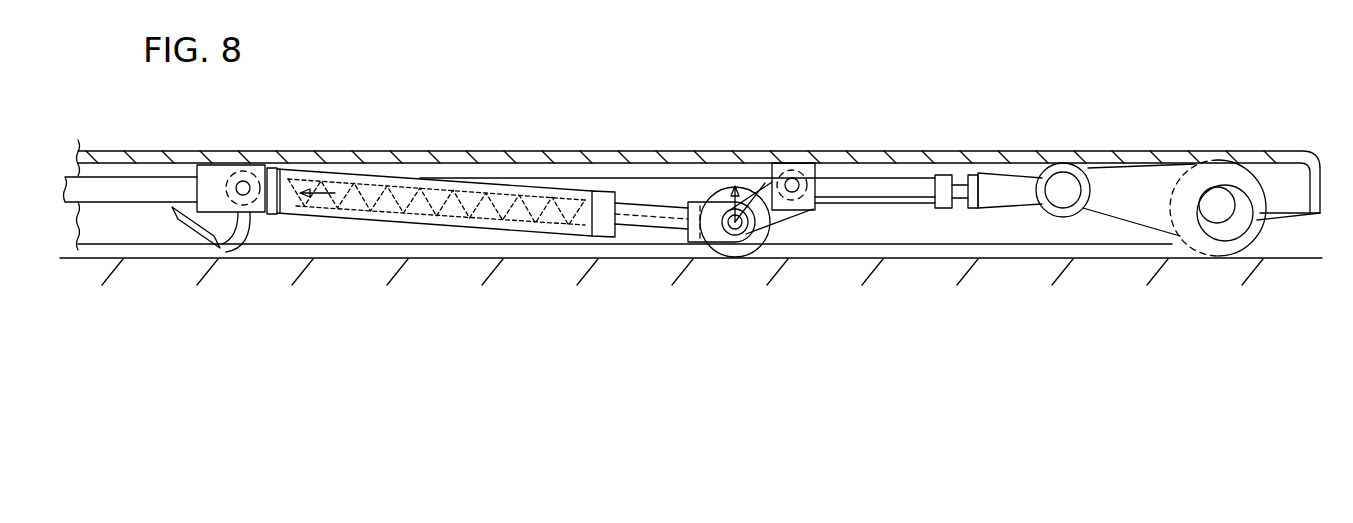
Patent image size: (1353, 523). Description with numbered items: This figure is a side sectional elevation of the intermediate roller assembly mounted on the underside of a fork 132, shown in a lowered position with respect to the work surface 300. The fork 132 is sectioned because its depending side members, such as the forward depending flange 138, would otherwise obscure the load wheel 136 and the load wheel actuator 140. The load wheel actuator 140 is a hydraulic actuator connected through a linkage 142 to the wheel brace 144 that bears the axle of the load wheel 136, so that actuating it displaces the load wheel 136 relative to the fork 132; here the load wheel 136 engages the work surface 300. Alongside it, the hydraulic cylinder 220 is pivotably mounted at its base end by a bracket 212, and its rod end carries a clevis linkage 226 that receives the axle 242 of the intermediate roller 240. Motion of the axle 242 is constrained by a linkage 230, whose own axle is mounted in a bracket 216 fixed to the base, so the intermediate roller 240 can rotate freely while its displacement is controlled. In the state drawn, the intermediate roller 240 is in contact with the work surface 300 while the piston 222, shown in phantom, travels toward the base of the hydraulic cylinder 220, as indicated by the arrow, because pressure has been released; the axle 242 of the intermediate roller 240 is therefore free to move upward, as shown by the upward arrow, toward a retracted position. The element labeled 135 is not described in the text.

The fork 132 is at (600, 151).
The cam 135 is at (1193, 158).
The load wheel 136 is at (1240, 172).
The forward depending flange 138 is at (1318, 175).
The load wheel actuator 140 is at (119, 188).
The linkage 142 is at (1012, 190).
The wheel brace 144 is at (1139, 200).
The bracket 212 is at (203, 166).
The bracket 216 is at (799, 164).
The hydraulic cylinder 220 is at (418, 188).
The piston 222 is at (338, 185).
The linkage 226 is at (696, 228).
The linkage 230 is at (773, 178).
The intermediate roller 240 is at (742, 250).
The axle 242 is at (741, 228).
The work surface 300 is at (518, 258).